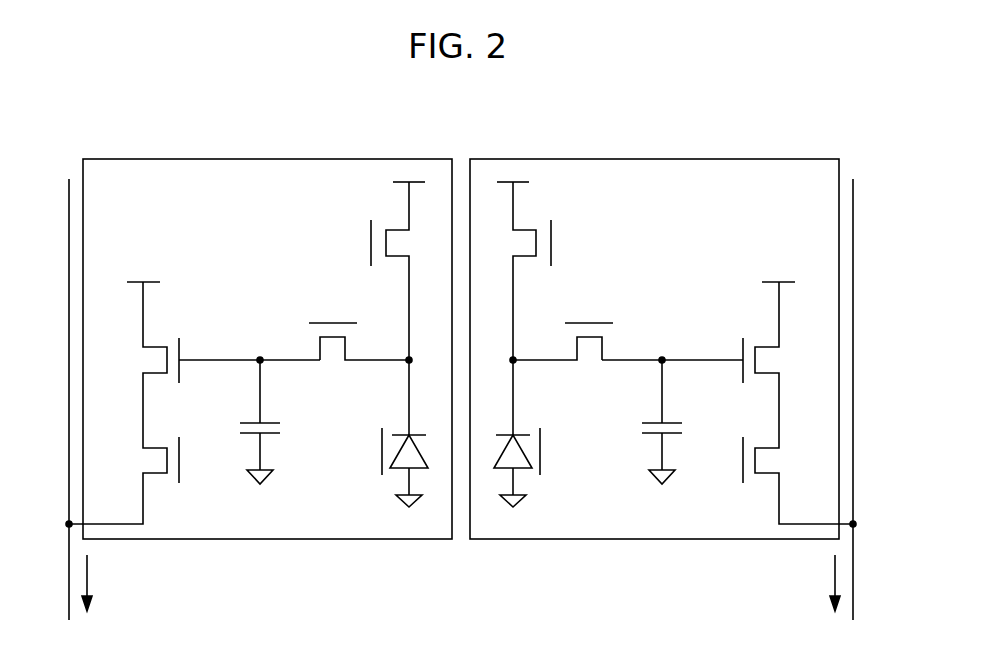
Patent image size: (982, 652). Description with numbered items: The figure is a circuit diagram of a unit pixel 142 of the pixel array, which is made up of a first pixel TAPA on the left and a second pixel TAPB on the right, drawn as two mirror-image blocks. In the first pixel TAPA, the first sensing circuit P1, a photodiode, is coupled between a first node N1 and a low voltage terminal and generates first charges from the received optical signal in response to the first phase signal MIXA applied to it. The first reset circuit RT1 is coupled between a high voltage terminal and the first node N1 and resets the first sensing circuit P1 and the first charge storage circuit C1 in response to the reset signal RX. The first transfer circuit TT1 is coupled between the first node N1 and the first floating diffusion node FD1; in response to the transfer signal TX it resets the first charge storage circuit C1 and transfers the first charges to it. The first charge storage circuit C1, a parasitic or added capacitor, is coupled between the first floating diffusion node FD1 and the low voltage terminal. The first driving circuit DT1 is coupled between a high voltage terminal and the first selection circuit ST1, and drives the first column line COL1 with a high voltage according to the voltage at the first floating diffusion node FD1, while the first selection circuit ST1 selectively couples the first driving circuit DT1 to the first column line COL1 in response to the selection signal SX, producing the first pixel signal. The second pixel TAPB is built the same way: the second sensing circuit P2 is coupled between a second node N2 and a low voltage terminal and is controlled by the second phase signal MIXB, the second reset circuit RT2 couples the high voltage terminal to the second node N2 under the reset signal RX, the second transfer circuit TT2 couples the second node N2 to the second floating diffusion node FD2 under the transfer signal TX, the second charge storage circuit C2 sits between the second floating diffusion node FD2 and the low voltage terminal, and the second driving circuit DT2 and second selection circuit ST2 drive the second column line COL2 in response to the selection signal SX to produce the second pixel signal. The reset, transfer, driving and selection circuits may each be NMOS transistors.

The unit pixel 142 is at (475, 112).
The first pixel TAPA is at (392, 159).
The second pixel TAPB is at (780, 159).
The first column line COL1 is at (69, 440).
The second column line COL2 is at (853, 440).
The first driving circuit DT1 is at (142, 346).
The second driving circuit DT2 is at (780, 346).
The first selection circuit ST1 is at (124, 467).
The second selection circuit ST2 is at (798, 467).
The selection signal SX is at (179, 460).
The first floating diffusion node FD1 is at (249, 346).
The second floating diffusion node FD2 is at (672, 346).
The first transfer circuit TT1 is at (359, 358).
The second transfer circuit TT2 is at (563, 358).
The transfer signal TX is at (333, 323).
The first node N1 is at (421, 364).
The second node N2 is at (500, 364).
The first reset circuit RT1 is at (405, 271).
The second reset circuit RT2 is at (516, 271).
The reset signal RX is at (371, 243).
The first charge storage circuit C1 is at (251, 422).
The second charge storage circuit C2 is at (671, 422).
The first sensing circuit P1 is at (415, 433).
The second sensing circuit P2 is at (507, 433).
The first phase signal MIXA is at (382, 452).
The second phase signal MIXB is at (540, 452).